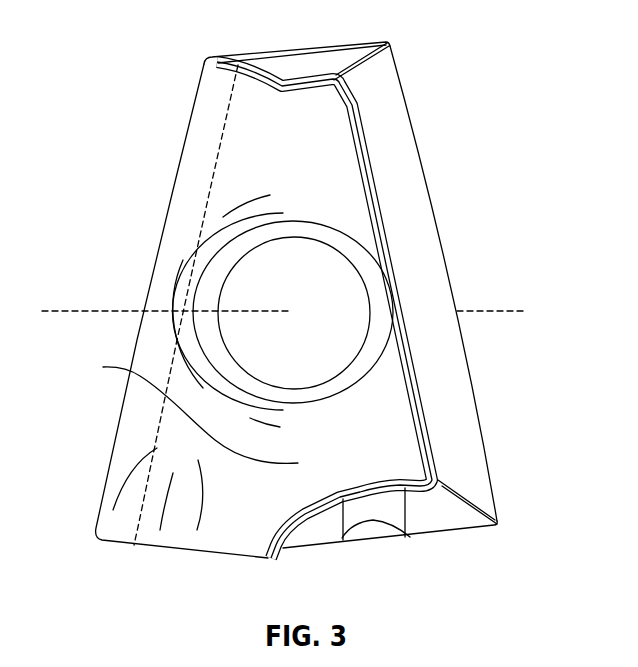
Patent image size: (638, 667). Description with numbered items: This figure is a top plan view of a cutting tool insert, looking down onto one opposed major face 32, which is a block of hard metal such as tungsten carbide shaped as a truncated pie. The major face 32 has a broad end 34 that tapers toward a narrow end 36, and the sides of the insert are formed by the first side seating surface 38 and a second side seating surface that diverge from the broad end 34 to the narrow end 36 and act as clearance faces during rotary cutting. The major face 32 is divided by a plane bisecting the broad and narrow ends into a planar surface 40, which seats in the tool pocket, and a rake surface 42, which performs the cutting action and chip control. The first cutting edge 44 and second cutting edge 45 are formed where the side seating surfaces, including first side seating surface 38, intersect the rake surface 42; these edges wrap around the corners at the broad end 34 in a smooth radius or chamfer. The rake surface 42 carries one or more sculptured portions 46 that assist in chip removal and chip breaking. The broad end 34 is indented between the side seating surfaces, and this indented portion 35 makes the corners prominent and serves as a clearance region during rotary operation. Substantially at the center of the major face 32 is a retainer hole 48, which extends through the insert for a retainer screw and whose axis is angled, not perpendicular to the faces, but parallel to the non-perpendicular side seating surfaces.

The opposed major face 32 is at (282, 387).
The broad end 34 is at (282, 565).
The indented portion 35 is at (378, 517).
The narrow end 36 is at (244, 50).
The first side seating surface 38 is at (418, 248).
The planar surface 40 is at (318, 202).
The rake surface 42 is at (233, 158).
The first cutting edge 44 is at (483, 452).
The second cutting edge 45 is at (105, 491).
The sculptured portion 46 is at (180, 533).
The retainer hole 48 is at (267, 292).